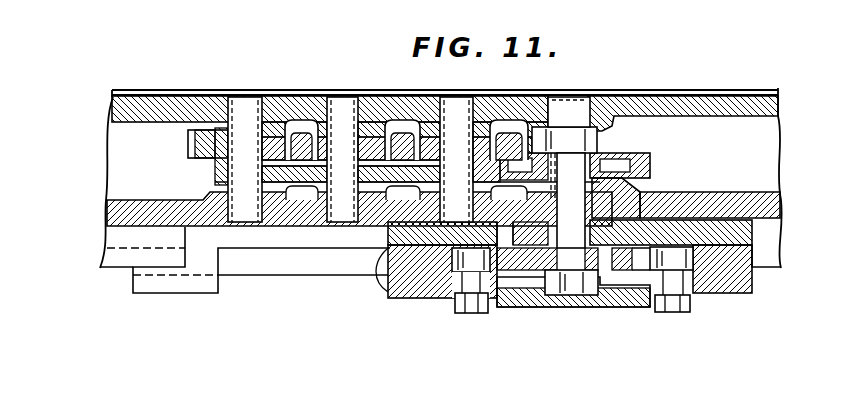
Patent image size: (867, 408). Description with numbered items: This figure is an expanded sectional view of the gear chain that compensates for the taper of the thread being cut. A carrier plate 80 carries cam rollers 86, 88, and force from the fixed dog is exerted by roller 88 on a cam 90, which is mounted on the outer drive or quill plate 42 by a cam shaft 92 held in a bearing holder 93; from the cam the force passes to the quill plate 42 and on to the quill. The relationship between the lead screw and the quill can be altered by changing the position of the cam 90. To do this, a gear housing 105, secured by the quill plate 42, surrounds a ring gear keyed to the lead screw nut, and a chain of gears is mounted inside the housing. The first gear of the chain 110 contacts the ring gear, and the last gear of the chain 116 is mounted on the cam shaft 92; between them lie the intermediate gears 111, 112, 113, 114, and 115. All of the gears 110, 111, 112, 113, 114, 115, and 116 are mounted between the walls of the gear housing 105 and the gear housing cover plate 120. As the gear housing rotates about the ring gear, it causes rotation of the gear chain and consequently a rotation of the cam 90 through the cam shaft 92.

The gear housing cover plate 120 is at (158, 102).
The first gear of the chain 110 is at (212, 94).
The gear 113 is at (326, 94).
The gear 114 is at (413, 137).
The gear 115 is at (483, 130).
The cam shaft 92 is at (573, 108).
The last gear of the chain 116 is at (645, 154).
The bearing holder 93 is at (632, 192).
The gear housing 105 is at (109, 211).
The outer drive plate (quill plate) 42 is at (387, 272).
The gear 111 is at (300, 163).
The gear 112 is at (306, 170).
The carrier plate 80 is at (405, 293).
The cam roller 88 is at (447, 290).
The cam 90 is at (504, 304).
The cam roller 86 is at (690, 273).